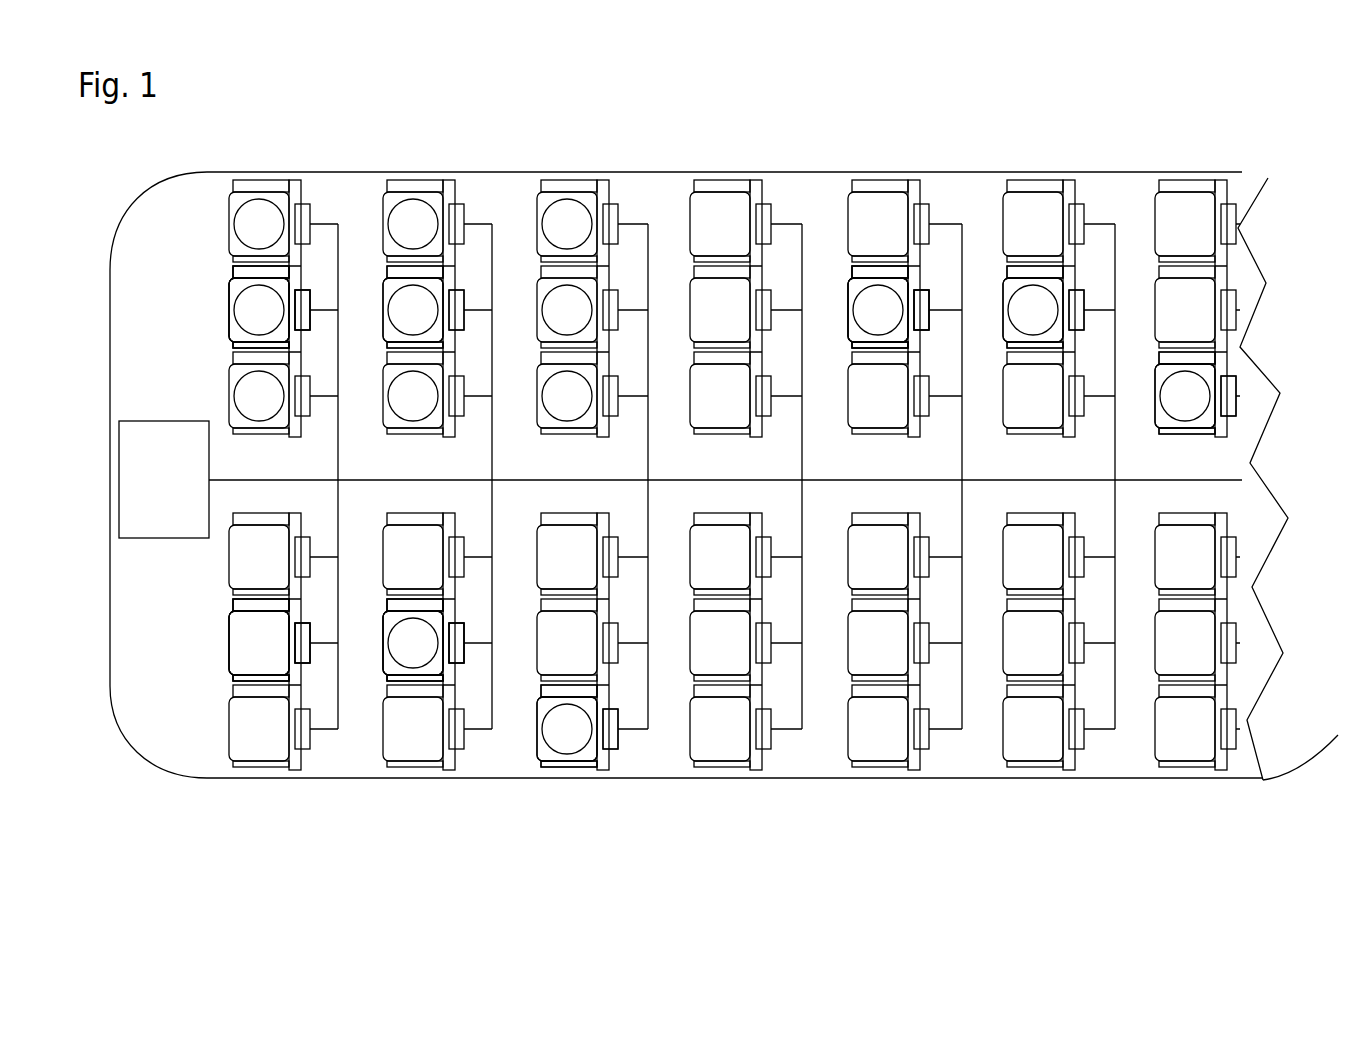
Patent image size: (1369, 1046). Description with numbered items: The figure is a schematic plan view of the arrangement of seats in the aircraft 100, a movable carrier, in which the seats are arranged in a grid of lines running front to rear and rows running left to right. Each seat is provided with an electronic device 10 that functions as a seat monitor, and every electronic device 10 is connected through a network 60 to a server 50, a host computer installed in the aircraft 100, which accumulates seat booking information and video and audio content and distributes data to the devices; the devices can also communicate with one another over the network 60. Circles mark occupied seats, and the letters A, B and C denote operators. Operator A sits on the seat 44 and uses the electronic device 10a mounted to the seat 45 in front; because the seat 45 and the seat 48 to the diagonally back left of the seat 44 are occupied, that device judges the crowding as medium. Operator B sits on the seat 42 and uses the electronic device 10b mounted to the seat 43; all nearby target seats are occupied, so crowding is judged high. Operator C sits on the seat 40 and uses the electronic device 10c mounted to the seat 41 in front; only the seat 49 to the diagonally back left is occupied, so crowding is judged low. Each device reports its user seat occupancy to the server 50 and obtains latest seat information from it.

The aircraft 100 is at (725, 172).
The electronic device 10 is at (457, 665).
The electronic device 10a is at (933, 307).
The electronic device 10b is at (312, 300).
The electronic device 10c is at (311, 641).
The seat 40 is at (382, 660).
The seat 41 is at (226, 648).
The seat 42 is at (380, 322).
The seat 43 is at (228, 313).
The seat 44 is at (1003, 317).
The seat 45 is at (852, 317).
The seat 48 is at (1151, 398).
The seat 49 is at (580, 773).
The server 50 is at (134, 420).
The network 60 is at (231, 480).